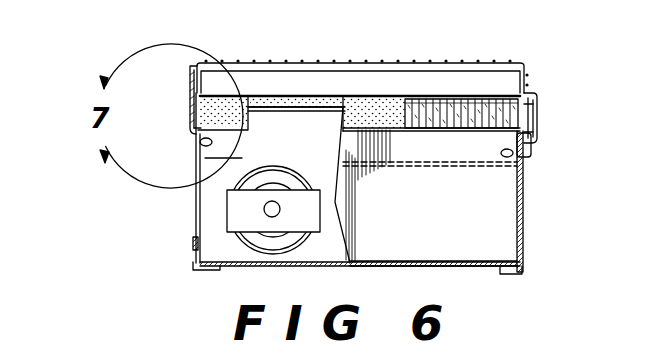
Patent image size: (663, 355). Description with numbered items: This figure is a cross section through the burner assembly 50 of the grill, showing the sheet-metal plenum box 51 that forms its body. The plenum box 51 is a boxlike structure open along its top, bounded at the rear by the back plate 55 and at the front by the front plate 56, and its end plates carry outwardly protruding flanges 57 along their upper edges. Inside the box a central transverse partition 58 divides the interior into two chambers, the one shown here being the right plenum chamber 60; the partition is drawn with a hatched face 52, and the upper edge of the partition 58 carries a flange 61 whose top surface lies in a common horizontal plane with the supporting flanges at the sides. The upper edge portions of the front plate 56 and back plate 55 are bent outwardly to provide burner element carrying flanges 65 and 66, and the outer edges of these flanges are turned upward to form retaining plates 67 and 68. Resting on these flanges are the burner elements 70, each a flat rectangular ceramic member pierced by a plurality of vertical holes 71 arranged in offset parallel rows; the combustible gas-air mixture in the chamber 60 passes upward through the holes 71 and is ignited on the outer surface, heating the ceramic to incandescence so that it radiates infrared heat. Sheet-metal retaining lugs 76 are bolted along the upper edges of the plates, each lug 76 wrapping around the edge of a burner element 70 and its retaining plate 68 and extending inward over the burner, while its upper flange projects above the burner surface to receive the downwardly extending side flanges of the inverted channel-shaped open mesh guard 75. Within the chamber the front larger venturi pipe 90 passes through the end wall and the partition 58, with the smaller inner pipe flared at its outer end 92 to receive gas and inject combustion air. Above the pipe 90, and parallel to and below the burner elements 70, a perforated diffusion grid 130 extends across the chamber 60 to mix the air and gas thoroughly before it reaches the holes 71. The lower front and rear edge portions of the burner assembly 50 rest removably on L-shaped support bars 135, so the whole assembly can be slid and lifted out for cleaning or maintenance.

The burner assembly 50 is at (282, 62).
The plenum box 51 is at (195, 245).
The partition wall 52 is at (395, 264).
The back plate 55 is at (521, 219).
The front plate 56 is at (197, 201).
The outwardly protruding flange 57 is at (297, 102).
The central transverse partition 58 is at (448, 154).
The right plenum chamber 60 is at (450, 238).
The flange 61 is at (362, 122).
The burner element carrying flange 65 is at (532, 143).
The burner element carrying flange 66 is at (188, 124).
The retaining plate 67 is at (530, 118).
The retaining plate 68 is at (188, 112).
The burner element 70 is at (362, 100).
The holes 71 is at (481, 103).
The guard 75 is at (337, 63).
The retaining lug 76 is at (188, 93).
The front larger pipe 90 is at (283, 171).
The outer end 92 is at (285, 183).
The diffusion grid 130 is at (403, 167).
The burner assembly support bar 135 is at (203, 266).